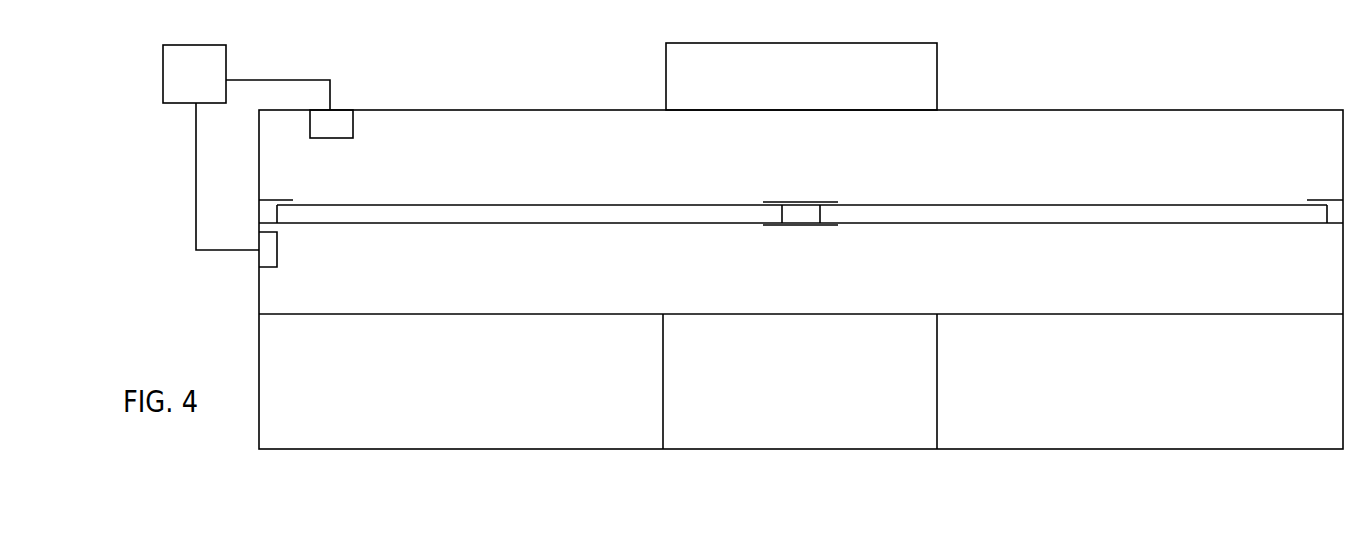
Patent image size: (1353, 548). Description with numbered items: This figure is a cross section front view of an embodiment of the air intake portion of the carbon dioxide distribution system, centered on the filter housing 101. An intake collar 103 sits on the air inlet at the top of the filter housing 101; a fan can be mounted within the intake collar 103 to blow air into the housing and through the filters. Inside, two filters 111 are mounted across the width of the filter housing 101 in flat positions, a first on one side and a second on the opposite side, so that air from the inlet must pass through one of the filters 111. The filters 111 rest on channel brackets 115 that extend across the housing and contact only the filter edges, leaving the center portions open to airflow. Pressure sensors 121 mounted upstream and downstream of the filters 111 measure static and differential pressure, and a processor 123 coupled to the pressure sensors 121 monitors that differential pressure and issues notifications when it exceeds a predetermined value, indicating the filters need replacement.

The filter housing 101 is at (1113, 120).
The intake collar 103 is at (925, 85).
The filter 111 is at (513, 205).
The channel bracket 115 is at (285, 223).
The pressure sensor 121 is at (333, 128).
The processor 123 is at (170, 92).